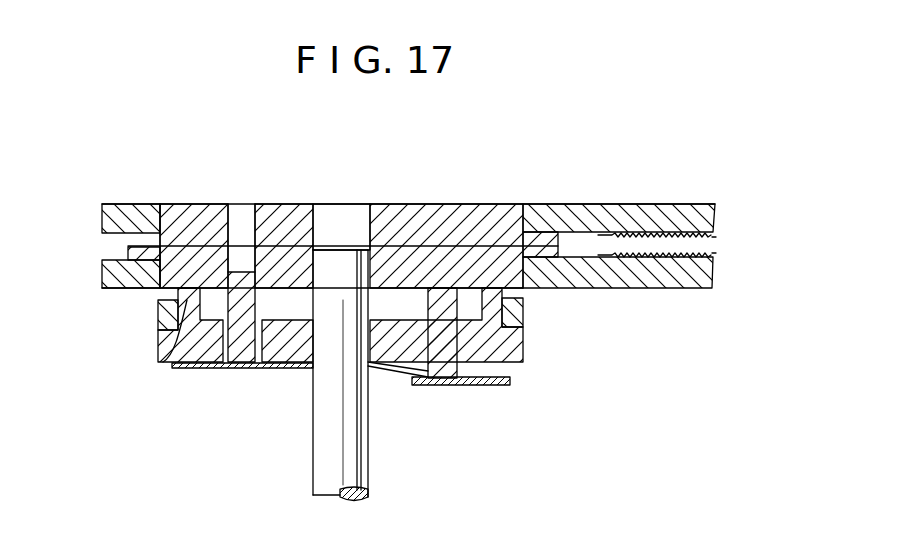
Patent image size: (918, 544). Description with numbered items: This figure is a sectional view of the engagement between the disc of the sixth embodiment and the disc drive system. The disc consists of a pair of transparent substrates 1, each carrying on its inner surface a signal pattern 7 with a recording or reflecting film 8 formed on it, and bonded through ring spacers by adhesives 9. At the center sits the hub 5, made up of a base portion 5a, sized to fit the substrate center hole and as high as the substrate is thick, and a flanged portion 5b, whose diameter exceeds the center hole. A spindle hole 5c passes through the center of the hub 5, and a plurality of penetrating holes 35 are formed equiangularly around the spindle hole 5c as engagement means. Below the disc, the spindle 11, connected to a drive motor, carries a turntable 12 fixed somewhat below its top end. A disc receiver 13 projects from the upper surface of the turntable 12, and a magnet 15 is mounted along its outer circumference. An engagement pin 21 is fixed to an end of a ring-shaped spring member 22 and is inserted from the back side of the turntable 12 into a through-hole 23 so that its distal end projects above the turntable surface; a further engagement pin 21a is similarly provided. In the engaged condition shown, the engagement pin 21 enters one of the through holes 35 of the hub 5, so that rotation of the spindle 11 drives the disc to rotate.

The substrate 1 is at (687, 204).
The hub 5 is at (213, 213).
The base portion 5a is at (185, 213).
The flanged portion 5b is at (145, 237).
The spindle hole 5c is at (343, 217).
The signal pattern 7 is at (622, 235).
The recording film 8 is at (712, 253).
The adhesive 9 is at (291, 237).
The spindle 11 is at (323, 465).
The turntable 12 is at (523, 342).
The disc receiver 13 is at (158, 352).
The magnet 15 is at (158, 312).
The engagement pin 21 is at (443, 368).
The engagement pin 21a is at (240, 353).
The spring member 22 is at (483, 387).
The through-hole 23 is at (205, 368).
The penetrating hole 35 is at (247, 262).